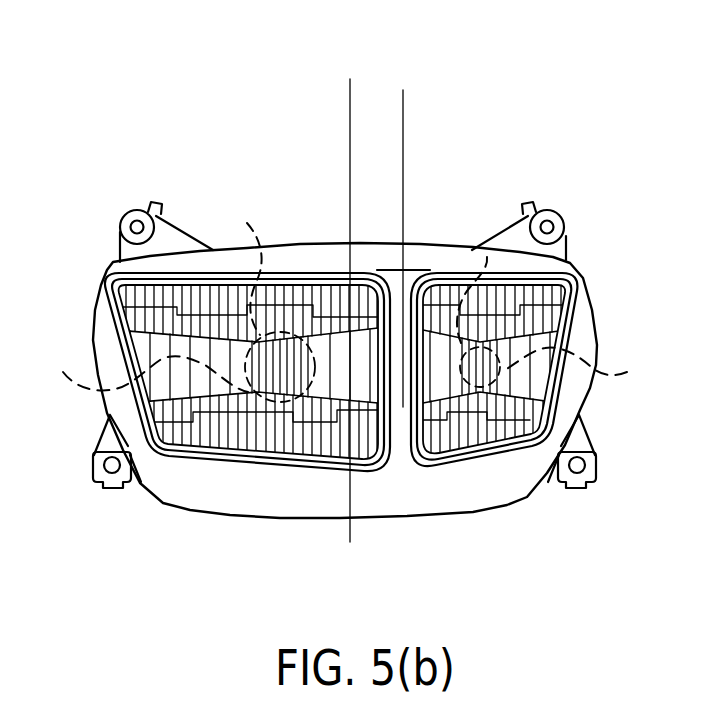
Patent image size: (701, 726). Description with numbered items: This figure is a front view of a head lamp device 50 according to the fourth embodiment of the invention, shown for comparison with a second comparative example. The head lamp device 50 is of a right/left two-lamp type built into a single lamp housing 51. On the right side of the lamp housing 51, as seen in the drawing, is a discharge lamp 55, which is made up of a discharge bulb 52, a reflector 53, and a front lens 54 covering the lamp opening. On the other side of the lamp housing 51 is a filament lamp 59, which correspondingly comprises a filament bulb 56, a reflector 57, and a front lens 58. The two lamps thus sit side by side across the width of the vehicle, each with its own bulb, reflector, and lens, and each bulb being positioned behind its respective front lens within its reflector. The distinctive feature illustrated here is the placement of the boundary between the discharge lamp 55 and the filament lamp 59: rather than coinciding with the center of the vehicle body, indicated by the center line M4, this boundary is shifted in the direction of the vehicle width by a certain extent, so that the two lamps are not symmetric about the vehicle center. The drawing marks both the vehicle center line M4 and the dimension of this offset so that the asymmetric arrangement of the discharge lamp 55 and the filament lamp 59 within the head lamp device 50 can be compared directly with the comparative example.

The head lamp device 50 is at (266, 130).
The lamp housing 51 is at (424, 242).
The discharge bulb 52 is at (487, 248).
The reflector 53 is at (587, 363).
The front lens 54 is at (520, 303).
The discharge lamp 55 is at (395, 548).
The filament bulb 56 is at (239, 266).
The reflector 57 is at (141, 368).
The front lens 58 is at (328, 327).
The filament lamp 59 is at (98, 548).
The center of the vehicle body M4 is at (350, 140).